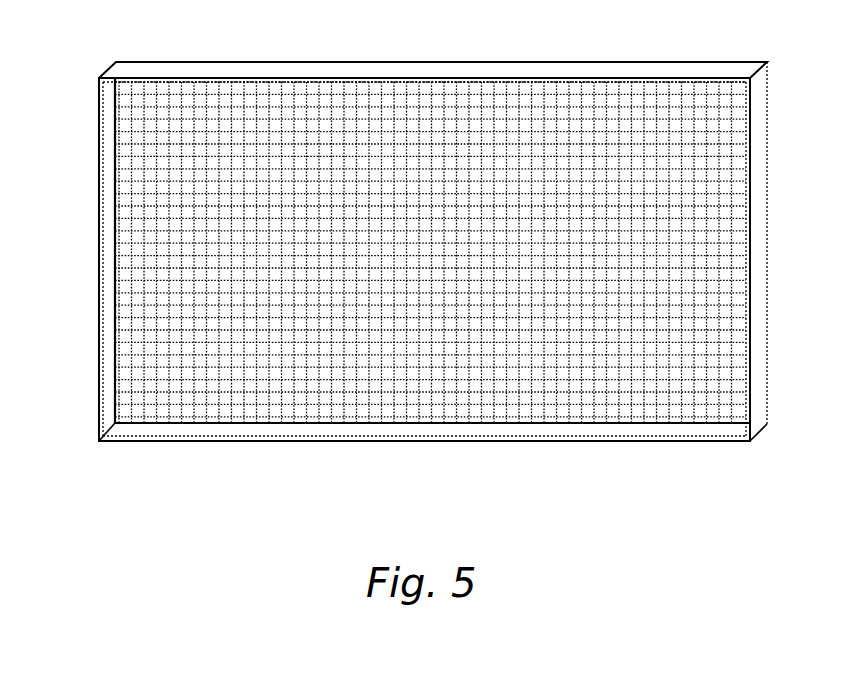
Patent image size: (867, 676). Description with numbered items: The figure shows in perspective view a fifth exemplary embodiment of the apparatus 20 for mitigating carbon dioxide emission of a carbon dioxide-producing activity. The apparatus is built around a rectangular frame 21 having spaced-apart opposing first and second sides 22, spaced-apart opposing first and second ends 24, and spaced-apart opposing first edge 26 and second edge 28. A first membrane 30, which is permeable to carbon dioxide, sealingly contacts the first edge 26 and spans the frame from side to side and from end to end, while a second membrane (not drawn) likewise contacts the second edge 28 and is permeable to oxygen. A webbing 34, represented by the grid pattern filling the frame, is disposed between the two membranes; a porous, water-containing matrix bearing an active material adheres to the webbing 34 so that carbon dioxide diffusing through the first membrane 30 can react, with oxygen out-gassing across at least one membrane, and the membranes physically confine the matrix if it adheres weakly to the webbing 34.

The apparatus 20 is at (433, 288).
The rectangular frame 21 is at (752, 441).
The first and second sides 22 is at (333, 66).
The first and second ends 24 is at (99, 204).
The first edge 26 is at (215, 441).
The second edge 28 is at (508, 62).
The first membrane 30 is at (337, 441).
The webbing 34 is at (433, 383).